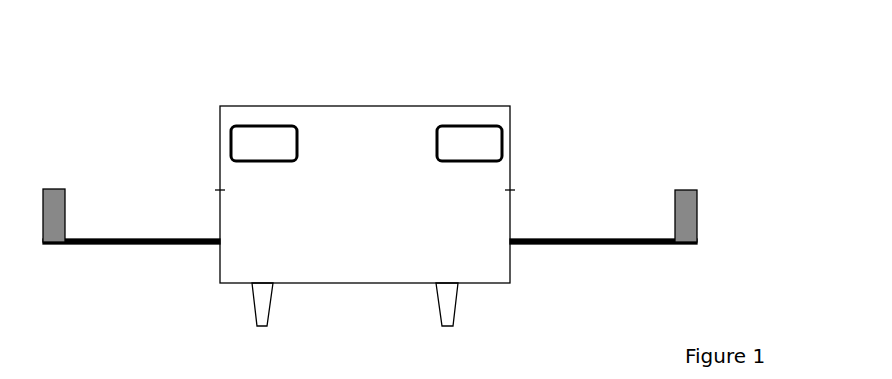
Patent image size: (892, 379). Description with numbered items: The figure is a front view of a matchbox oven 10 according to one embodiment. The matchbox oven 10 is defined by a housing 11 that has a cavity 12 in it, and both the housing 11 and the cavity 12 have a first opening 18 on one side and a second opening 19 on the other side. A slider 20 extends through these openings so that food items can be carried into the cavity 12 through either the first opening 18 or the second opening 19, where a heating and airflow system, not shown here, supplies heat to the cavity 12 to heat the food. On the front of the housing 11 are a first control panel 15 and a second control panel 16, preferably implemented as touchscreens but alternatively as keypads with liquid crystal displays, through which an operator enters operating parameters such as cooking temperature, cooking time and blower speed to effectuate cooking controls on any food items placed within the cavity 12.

The matchbox oven 10 is at (406, 49).
The housing 11 is at (478, 107).
The cavity 12 is at (372, 206).
The first control panel 15 is at (275, 155).
The second control panel 16 is at (483, 155).
The first opening 18 is at (217, 218).
The second opening 19 is at (514, 214).
The slider 20 is at (602, 244).